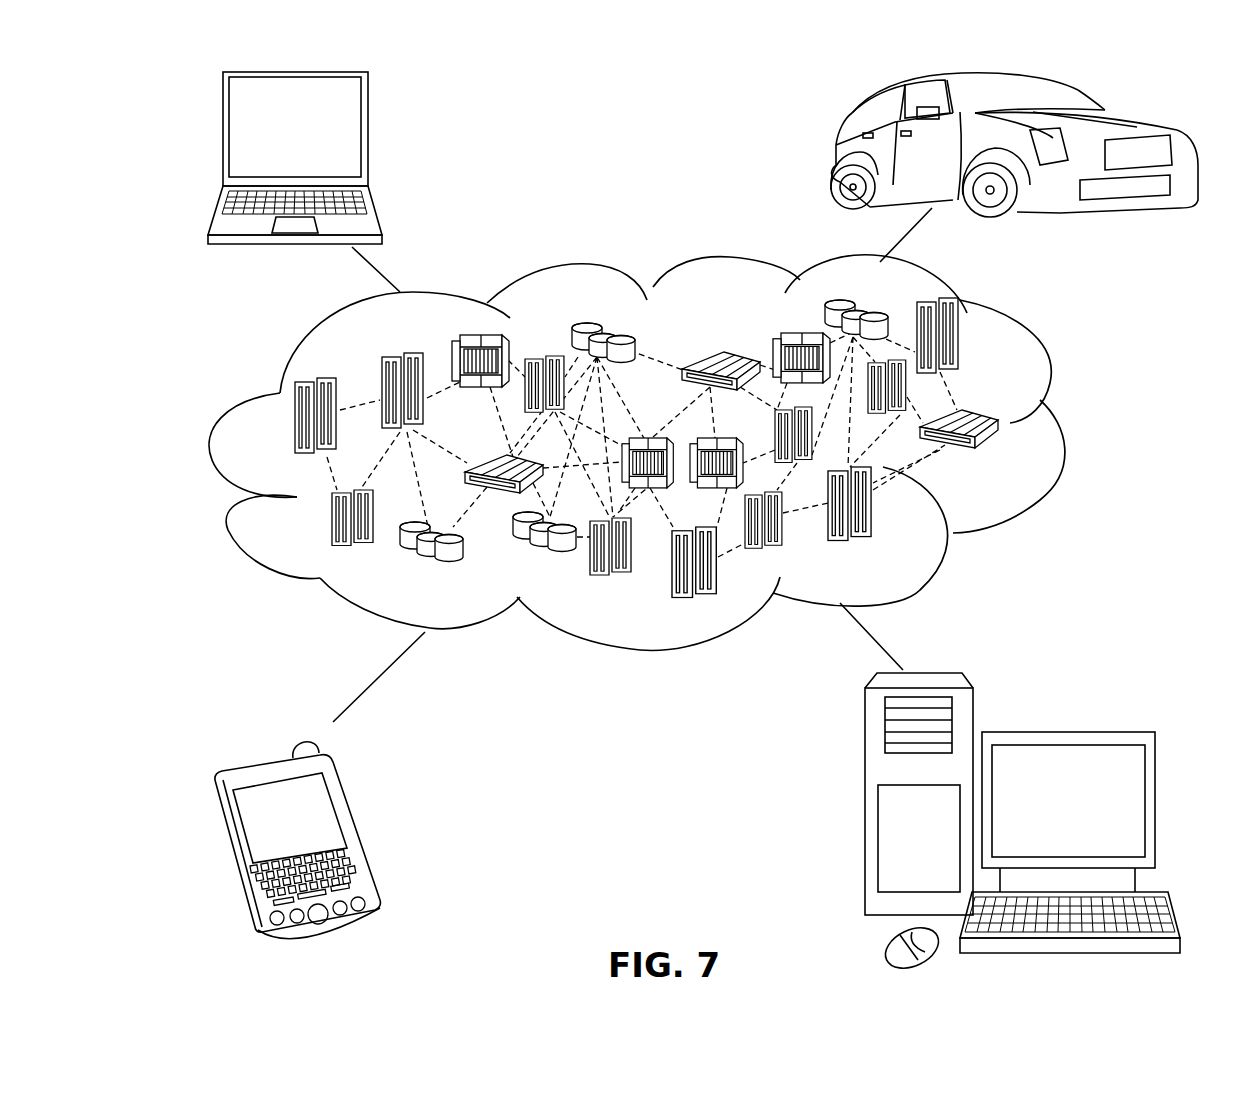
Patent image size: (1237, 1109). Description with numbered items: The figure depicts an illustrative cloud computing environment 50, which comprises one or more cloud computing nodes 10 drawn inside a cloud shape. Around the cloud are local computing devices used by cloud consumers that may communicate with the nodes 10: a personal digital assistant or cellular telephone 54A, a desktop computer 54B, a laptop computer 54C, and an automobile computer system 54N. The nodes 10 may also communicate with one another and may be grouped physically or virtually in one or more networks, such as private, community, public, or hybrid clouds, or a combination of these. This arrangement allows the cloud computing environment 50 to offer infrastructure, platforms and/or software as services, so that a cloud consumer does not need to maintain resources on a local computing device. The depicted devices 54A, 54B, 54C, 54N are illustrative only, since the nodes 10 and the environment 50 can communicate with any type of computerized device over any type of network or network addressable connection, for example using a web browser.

The cloud computing environment 50 is at (1063, 425).
The cloud computing node 10 is at (1010, 459).
The personal digital assistant or cellular telephone 54A is at (357, 830).
The desktop computer 54B is at (1065, 732).
The laptop computer 54C is at (368, 135).
The automobile computer system 54N is at (832, 152).